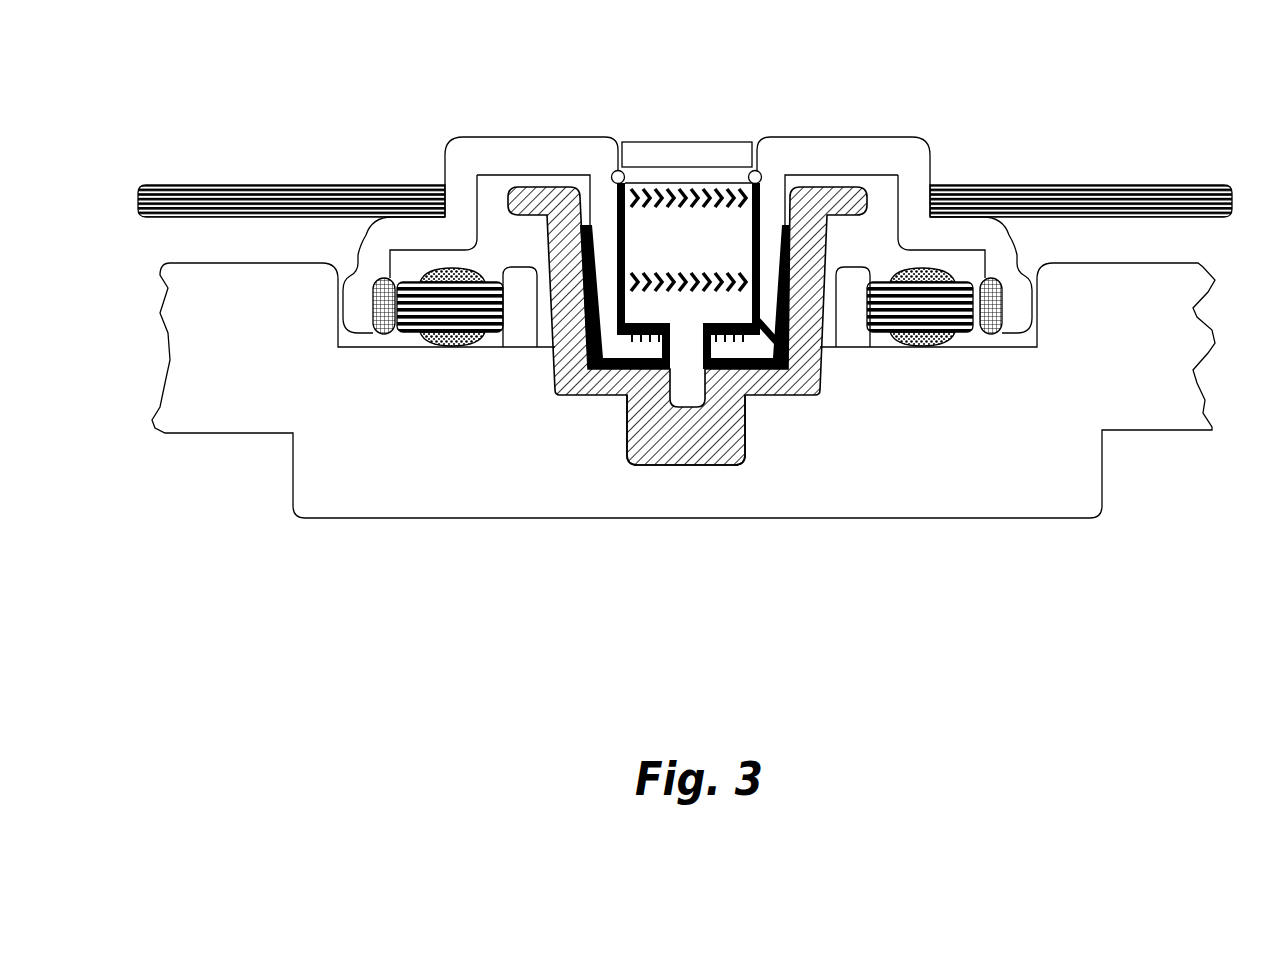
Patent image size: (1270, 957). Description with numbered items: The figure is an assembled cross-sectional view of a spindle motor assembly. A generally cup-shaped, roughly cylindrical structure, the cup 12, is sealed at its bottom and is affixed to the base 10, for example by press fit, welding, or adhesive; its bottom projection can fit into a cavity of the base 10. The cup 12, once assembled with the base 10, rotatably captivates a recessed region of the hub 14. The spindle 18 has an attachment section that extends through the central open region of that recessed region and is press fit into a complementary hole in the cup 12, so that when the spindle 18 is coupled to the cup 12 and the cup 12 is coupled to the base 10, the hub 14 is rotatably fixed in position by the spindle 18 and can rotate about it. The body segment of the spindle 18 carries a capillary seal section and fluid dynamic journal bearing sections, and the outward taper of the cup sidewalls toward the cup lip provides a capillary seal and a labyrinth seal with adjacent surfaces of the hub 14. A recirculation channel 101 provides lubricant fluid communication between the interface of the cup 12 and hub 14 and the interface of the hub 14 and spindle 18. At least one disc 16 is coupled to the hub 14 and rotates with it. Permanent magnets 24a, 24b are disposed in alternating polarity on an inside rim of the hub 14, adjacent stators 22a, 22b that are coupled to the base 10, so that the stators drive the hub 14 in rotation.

The base 10 is at (358, 475).
The cup 12 is at (625, 460).
The hub 14 is at (517, 147).
The disc 16 is at (295, 185).
The spindle 18 is at (700, 163).
The stator 22a is at (450, 305).
The stator 22b is at (907, 298).
The permanent magnet 24a is at (372, 333).
The permanent magnet 24b is at (992, 333).
The recirculation channel 101 is at (761, 327).